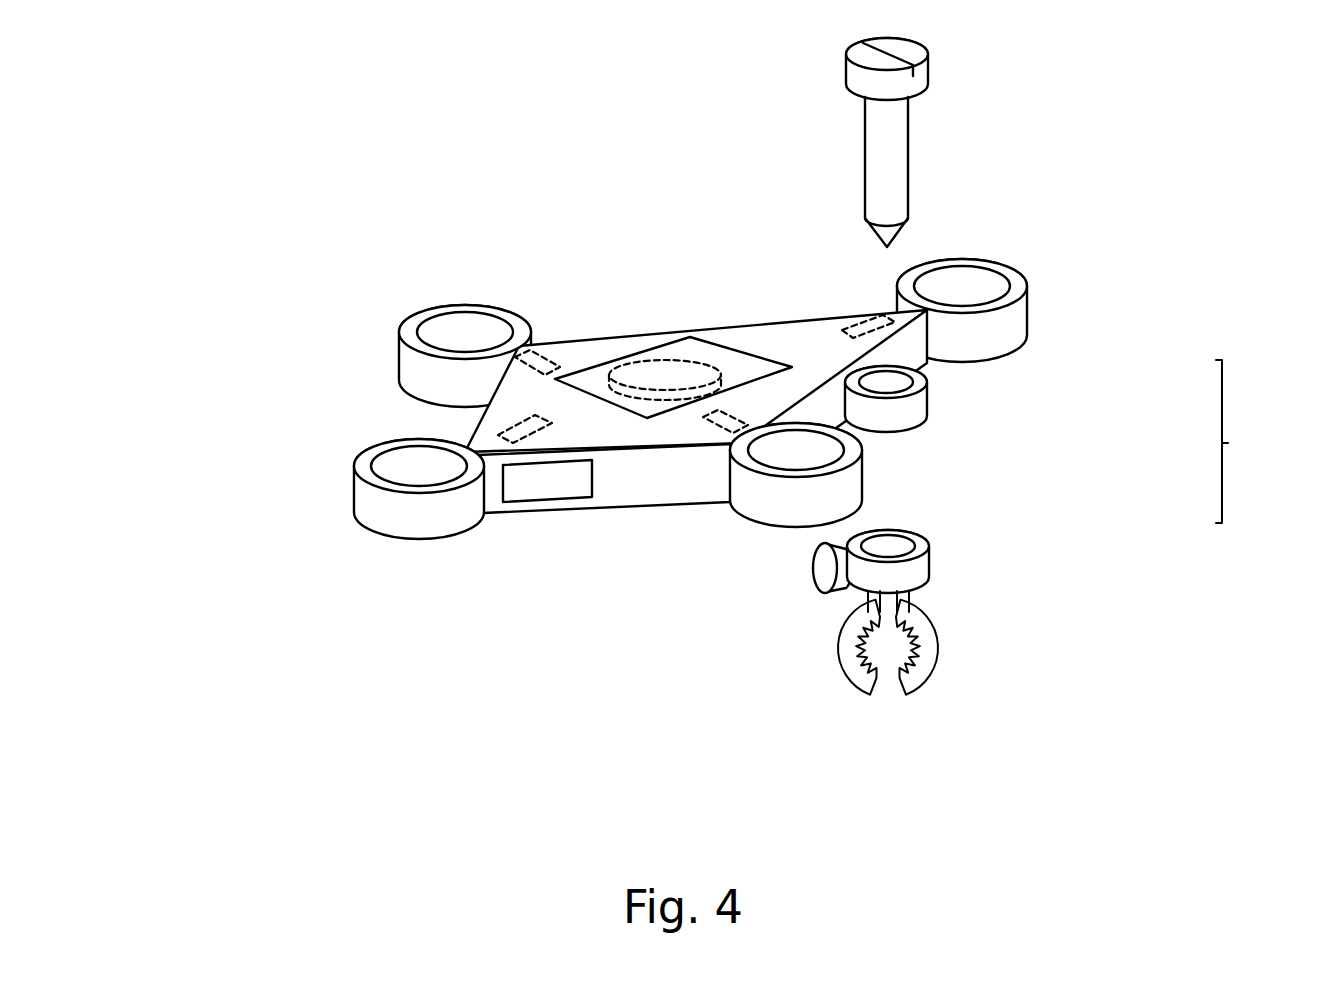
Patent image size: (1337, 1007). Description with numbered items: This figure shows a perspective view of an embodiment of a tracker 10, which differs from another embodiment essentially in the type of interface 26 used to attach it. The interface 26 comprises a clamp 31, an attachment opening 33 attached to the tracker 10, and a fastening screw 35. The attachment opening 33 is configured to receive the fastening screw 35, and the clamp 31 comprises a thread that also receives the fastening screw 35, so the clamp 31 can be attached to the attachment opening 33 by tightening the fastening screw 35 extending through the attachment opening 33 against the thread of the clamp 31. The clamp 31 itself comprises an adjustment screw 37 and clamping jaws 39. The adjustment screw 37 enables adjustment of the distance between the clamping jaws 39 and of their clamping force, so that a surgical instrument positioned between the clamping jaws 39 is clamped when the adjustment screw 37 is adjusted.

The tracker 10 is at (268, 218).
The interface 26 is at (1251, 441).
The clamp 31 is at (929, 548).
The attachment opening 33 is at (928, 398).
The fastening screw 35 is at (910, 133).
The adjustment screw 37 is at (813, 569).
The clamping jaws 39 is at (843, 663).